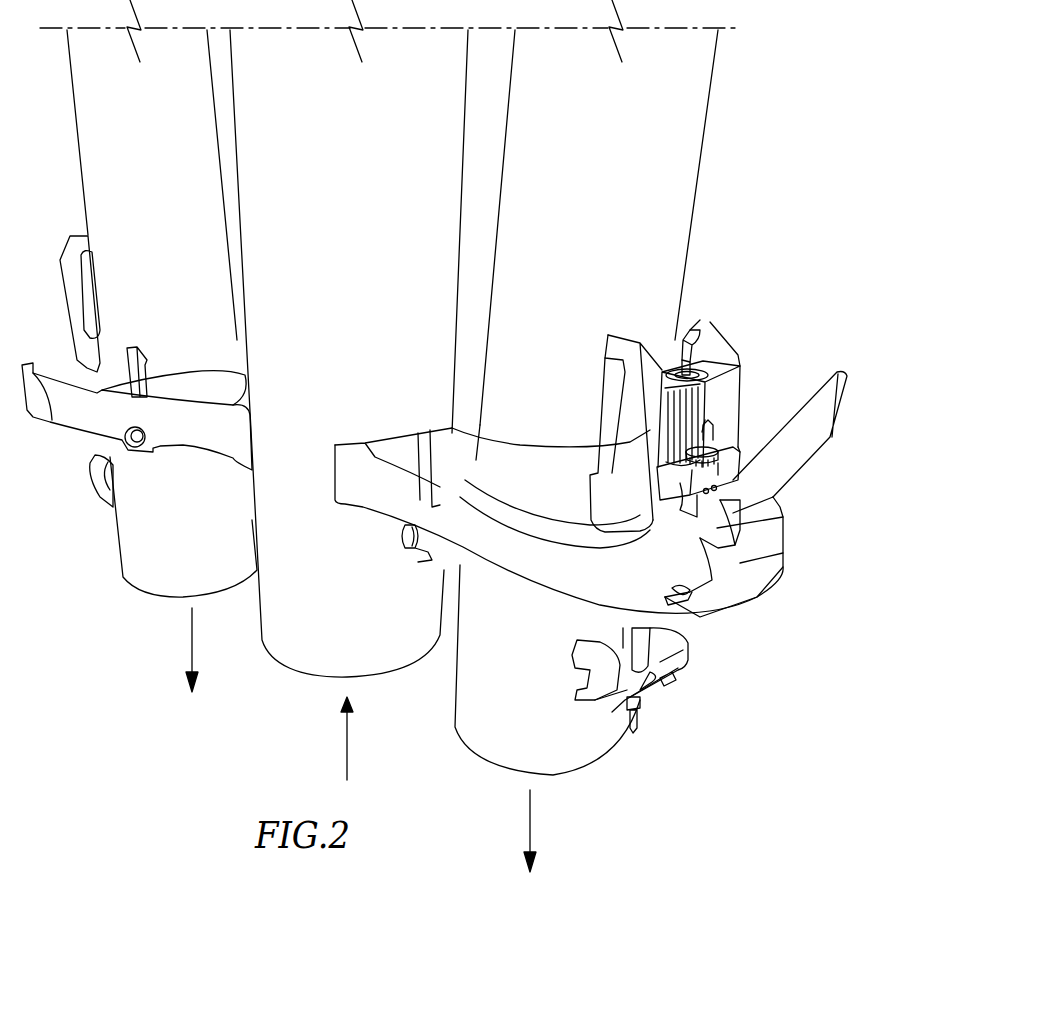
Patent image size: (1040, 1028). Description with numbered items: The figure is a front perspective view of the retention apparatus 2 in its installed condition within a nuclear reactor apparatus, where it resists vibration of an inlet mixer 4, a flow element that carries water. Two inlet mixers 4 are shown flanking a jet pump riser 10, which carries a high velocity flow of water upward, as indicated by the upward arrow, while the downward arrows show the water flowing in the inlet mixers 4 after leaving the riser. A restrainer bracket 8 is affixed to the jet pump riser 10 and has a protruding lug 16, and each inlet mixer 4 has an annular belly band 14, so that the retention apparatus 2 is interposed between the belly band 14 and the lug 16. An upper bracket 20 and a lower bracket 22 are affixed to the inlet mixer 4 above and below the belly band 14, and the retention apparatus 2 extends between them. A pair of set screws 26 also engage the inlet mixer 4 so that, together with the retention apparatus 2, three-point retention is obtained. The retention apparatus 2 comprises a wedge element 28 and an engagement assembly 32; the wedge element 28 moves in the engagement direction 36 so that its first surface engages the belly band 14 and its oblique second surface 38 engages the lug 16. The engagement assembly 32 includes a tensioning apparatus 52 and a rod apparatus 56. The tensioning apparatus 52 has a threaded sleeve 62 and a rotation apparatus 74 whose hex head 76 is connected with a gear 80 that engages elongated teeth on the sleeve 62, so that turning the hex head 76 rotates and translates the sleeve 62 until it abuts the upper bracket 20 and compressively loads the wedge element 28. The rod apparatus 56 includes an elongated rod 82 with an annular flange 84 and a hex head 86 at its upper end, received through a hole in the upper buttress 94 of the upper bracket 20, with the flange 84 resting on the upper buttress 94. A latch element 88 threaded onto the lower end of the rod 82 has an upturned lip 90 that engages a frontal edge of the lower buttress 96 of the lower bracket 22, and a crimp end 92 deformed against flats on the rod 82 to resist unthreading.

The retention apparatus 2 is at (75, 395).
The inlet mixer 4 is at (98, 128).
The restrainer bracket 8 is at (208, 447).
The jet pump riser 10 is at (295, 655).
The belly band 14 is at (240, 400).
The lug 16 is at (685, 585).
The upper bracket 20 is at (742, 338).
The lower bracket 22 is at (568, 710).
The set screws 26 is at (410, 546).
The wedge element 28 is at (655, 540).
The engagement assembly 32 is at (702, 315).
The engagement direction 36 is at (620, 632).
The second surface 38 is at (700, 538).
The tensioning apparatus 52 is at (725, 435).
The rod apparatus 56 is at (678, 322).
The sleeve 62 is at (722, 420).
The rotation apparatus 74 is at (726, 447).
The hex head 76 is at (733, 447).
The gear 80 is at (690, 465).
The rod 82 is at (645, 640).
The flange 84 is at (705, 360).
The hex head 86 is at (680, 350).
The latch element 88 is at (662, 700).
The lip 90 is at (670, 660).
The crimp end 92 is at (627, 720).
The upper buttress 94 is at (683, 385).
The lower buttress 96 is at (630, 700).